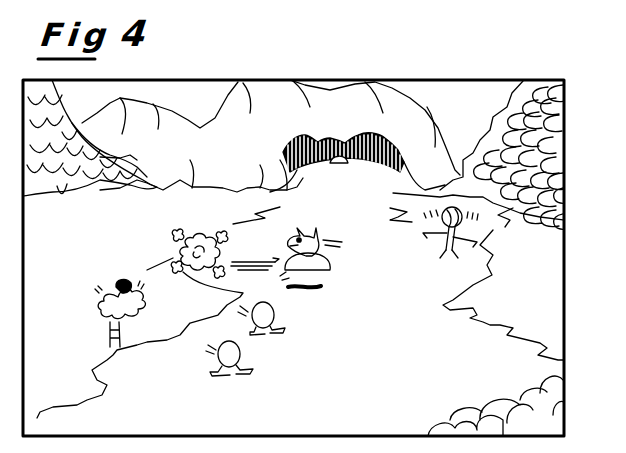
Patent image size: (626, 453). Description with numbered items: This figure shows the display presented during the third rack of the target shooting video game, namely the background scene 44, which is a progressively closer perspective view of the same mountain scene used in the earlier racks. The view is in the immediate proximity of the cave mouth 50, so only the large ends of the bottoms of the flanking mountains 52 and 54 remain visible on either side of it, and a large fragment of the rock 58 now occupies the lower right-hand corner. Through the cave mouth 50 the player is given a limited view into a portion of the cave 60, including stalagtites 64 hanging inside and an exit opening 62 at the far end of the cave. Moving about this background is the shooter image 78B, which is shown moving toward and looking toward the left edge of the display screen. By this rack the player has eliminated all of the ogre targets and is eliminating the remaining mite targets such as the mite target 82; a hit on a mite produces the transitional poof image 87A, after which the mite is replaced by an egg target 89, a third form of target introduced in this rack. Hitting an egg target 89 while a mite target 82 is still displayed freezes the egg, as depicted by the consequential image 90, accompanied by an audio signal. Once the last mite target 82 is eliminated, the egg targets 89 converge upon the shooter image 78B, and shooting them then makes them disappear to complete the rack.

The background scene 44 is at (568, 257).
The cave opening 50 is at (310, 182).
The mountain 52 is at (106, 198).
The mountain 54 is at (548, 157).
The rock 58 is at (560, 410).
The cave 60 is at (360, 172).
The exit opening 62 is at (343, 165).
The stalagtites 64 is at (368, 143).
The shooter image 78B is at (330, 260).
The mite target 82 is at (108, 316).
The poof image 87A is at (193, 236).
The egg target 89 is at (276, 311).
The consequential image 90 is at (448, 250).